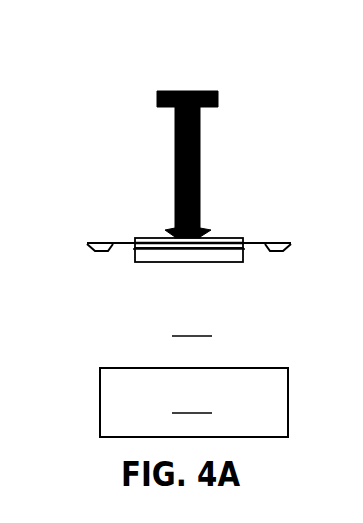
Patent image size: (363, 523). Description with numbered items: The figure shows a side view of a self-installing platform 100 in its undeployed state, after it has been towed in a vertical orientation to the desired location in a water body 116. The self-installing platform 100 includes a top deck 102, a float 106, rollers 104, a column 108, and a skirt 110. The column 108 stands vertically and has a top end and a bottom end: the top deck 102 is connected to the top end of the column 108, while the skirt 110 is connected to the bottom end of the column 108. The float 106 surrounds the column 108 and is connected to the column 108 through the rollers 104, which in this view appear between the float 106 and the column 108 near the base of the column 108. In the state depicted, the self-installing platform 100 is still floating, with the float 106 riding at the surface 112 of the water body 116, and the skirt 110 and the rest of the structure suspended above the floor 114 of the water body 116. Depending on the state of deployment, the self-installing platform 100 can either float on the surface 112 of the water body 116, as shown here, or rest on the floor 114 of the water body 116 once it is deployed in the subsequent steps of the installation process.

The self-installing platform 100 is at (92, 148).
The top deck 102 is at (207, 91).
The column 108 is at (200, 153).
The rollers 104 is at (210, 237).
The float 106 is at (243, 238).
The skirt 110 is at (238, 262).
The surface 112 is at (112, 243).
The floor 114 is at (194, 402).
The water body 116 is at (192, 325).